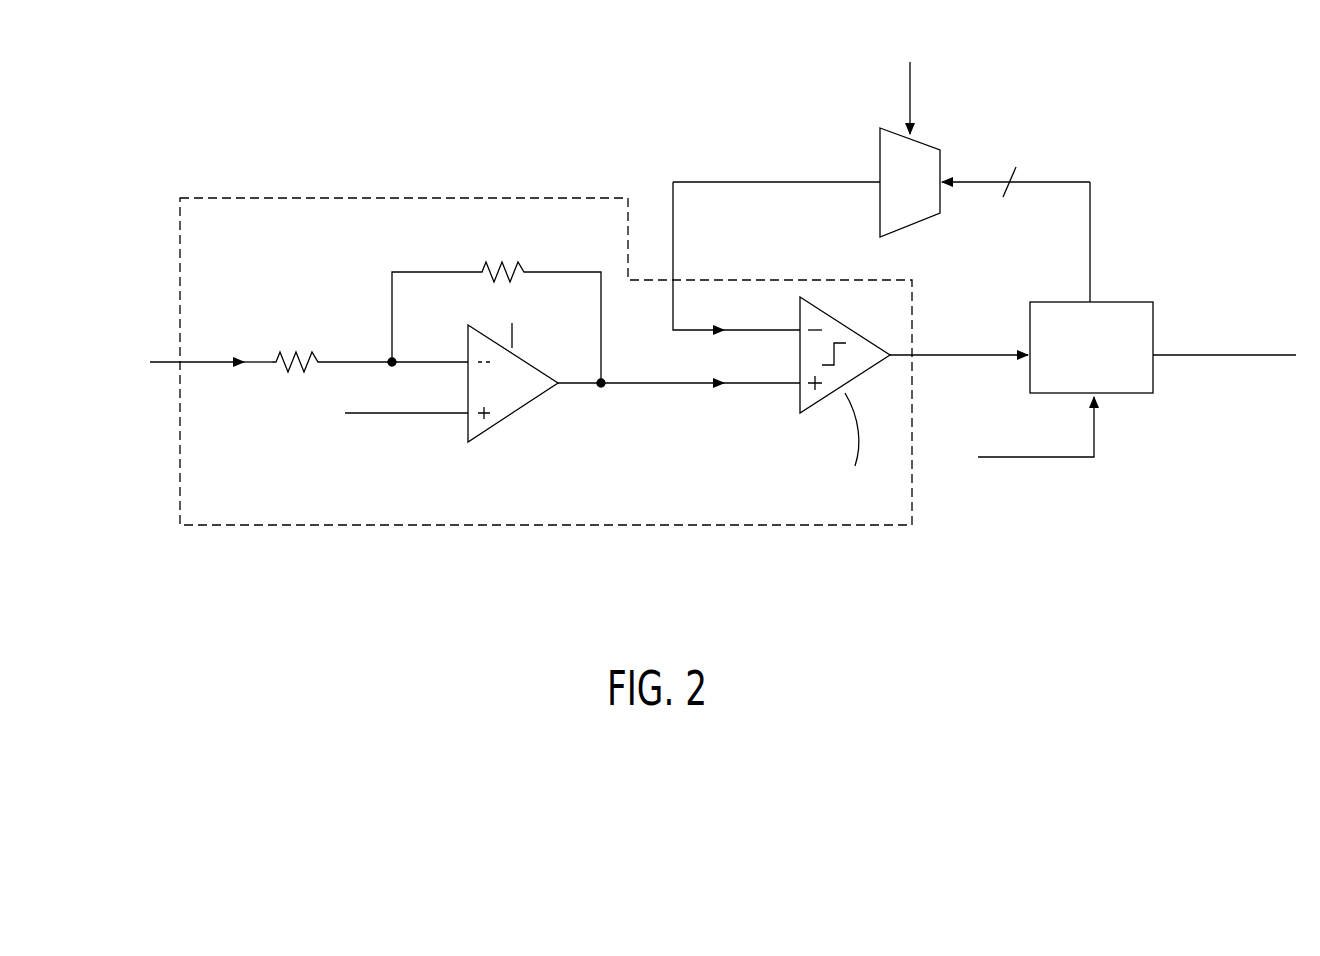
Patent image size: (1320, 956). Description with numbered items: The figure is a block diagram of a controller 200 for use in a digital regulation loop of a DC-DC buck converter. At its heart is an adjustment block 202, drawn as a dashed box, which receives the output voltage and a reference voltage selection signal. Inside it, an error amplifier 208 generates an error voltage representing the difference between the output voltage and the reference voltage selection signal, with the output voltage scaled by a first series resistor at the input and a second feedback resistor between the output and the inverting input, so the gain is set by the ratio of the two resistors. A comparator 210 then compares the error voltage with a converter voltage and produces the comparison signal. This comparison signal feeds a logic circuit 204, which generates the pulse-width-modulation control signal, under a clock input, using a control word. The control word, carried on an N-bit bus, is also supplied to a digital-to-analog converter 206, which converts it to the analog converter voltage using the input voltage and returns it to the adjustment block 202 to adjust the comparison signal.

The controller 200 is at (258, 128).
The adjustment block 202 is at (712, 526).
The logic circuit 204 is at (1132, 300).
The DAC 206 is at (878, 157).
The error amplifier 208 is at (521, 411).
The comparator 210 is at (800, 400).